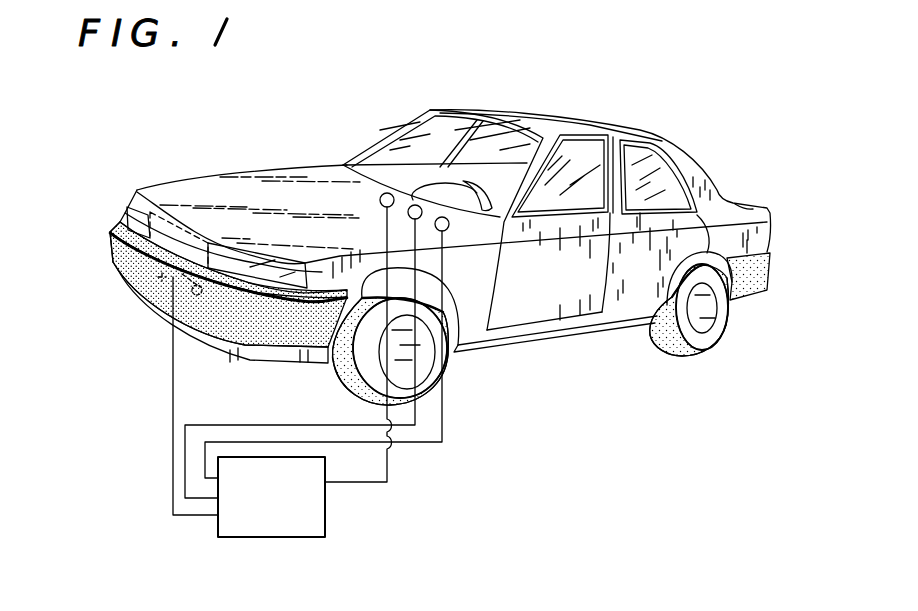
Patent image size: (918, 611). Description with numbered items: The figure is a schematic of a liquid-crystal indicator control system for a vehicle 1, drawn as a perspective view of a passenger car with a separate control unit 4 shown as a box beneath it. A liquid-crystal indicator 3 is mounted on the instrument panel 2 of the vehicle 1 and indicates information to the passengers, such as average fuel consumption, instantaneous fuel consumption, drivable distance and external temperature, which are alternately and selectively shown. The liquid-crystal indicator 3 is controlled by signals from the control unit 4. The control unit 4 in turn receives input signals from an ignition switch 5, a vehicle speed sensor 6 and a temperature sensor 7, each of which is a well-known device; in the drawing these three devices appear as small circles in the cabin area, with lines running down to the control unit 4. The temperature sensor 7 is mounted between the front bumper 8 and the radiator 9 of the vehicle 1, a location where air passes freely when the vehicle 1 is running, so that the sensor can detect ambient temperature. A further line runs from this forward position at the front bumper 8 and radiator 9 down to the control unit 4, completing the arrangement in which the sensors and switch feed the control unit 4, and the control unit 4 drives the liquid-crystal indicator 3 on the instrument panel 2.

The vehicle 1 is at (569, 114).
The instrument panel 2 is at (457, 185).
The liquid-crystal indicator 3 is at (378, 196).
The control unit 4 is at (326, 533).
The ignition switch 5 is at (412, 205).
The vehicle speed sensor 6 is at (449, 230).
The temperature sensor 7 is at (151, 311).
The front bumper 8 is at (110, 252).
The radiator 9 is at (182, 194).